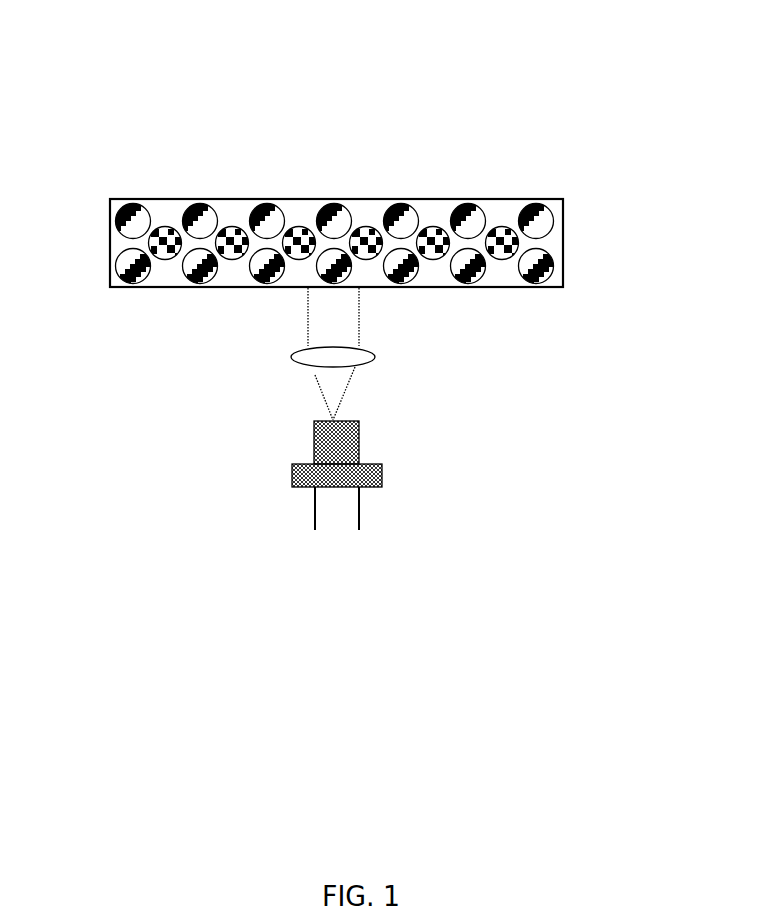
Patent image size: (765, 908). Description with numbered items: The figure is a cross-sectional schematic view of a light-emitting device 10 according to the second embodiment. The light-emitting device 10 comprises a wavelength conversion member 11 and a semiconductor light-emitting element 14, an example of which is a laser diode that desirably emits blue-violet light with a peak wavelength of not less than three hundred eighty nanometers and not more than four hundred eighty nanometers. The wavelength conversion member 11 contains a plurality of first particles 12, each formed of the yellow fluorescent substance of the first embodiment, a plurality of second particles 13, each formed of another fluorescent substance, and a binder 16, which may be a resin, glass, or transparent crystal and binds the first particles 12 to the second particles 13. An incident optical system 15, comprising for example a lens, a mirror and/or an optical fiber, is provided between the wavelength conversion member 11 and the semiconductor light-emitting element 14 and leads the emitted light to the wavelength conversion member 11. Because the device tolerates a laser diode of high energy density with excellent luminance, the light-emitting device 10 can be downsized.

The light-emitting device 10 is at (142, 176).
The wavelength conversion member 11 is at (563, 242).
The first particles 12 is at (366, 243).
The second particles 13 is at (270, 204).
The semiconductor light-emitting element 14 is at (303, 473).
The incident optical system 15 is at (367, 360).
The binder 16 is at (170, 272).